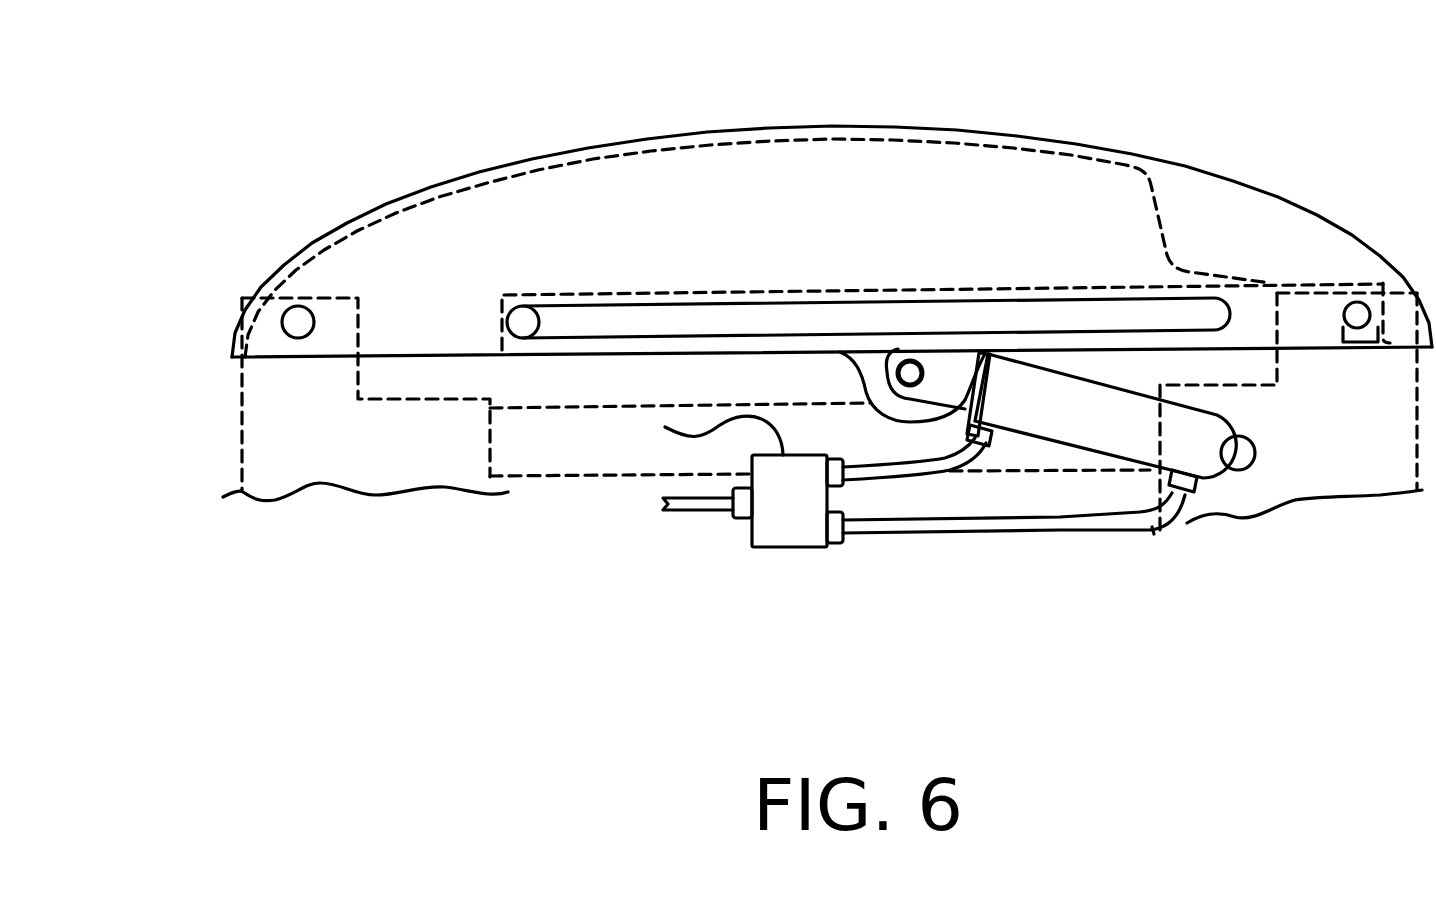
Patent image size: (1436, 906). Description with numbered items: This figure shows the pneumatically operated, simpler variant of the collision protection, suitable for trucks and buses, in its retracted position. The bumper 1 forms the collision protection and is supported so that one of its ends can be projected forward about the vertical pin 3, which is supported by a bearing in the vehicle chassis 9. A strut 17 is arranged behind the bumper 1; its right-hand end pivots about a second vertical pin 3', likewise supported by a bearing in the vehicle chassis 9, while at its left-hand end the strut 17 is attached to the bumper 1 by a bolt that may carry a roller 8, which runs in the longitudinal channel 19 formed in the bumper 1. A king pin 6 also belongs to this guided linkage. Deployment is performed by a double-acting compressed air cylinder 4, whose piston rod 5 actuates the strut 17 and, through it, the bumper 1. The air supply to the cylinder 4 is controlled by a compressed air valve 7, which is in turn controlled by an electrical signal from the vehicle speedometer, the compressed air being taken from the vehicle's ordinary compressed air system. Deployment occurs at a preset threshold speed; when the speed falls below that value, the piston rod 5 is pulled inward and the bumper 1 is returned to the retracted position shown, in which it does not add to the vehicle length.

The bumper 1 is at (527, 223).
The vertical pin 3 is at (362, 299).
The second vertical pin 3' is at (1288, 306).
The compressed air cylinder 4 is at (1113, 418).
The piston rod 5 is at (937, 392).
The king pin 6 is at (507, 320).
The compressed air valve 7 is at (785, 518).
The roller 8 is at (523, 322).
The vehicle chassis 9 is at (293, 438).
The strut 17 is at (993, 290).
The longitudinal channel in bumper 19 is at (853, 317).